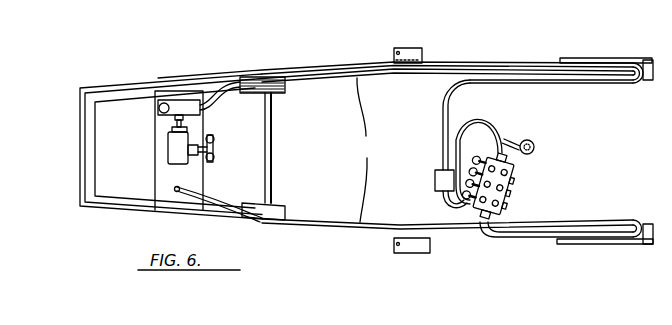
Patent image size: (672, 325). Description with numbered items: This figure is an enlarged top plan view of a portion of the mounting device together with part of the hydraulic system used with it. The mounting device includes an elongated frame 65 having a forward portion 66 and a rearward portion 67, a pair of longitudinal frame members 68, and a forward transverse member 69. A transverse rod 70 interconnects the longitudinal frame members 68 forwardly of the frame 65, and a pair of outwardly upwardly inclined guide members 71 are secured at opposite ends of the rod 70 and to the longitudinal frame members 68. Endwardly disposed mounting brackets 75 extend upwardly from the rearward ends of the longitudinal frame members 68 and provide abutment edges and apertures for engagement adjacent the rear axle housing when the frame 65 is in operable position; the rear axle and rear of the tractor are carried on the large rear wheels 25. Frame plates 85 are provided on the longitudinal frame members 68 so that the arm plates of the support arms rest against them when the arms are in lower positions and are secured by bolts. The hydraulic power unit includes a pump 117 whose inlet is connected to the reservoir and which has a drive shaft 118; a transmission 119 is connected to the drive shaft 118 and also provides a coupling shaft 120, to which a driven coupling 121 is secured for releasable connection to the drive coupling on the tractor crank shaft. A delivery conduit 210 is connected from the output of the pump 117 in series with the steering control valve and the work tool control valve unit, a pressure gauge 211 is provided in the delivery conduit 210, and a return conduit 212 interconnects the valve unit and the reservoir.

The rear wheels 25 is at (266, 9).
The elongated frame 65 is at (352, 240).
The forward portion 66 is at (88, 88).
The rearward portion 67 is at (617, 62).
The longitudinal frame members 68 is at (362, 150).
The forward transverse member 69 is at (86, 137).
The transverse rod 70 is at (272, 147).
The guide members 71 is at (275, 93).
The mounting brackets 75 is at (636, 62).
The frame plates 85 is at (415, 52).
The pump 117 is at (180, 106).
The drive shaft 118 is at (176, 120).
The transmission 119 is at (173, 149).
The coupling shaft 120 is at (204, 163).
The driven coupling 121 is at (214, 141).
The delivery conduit 210 is at (445, 113).
The pressure gauge 211 is at (538, 143).
The return conduit 212 is at (628, 220).